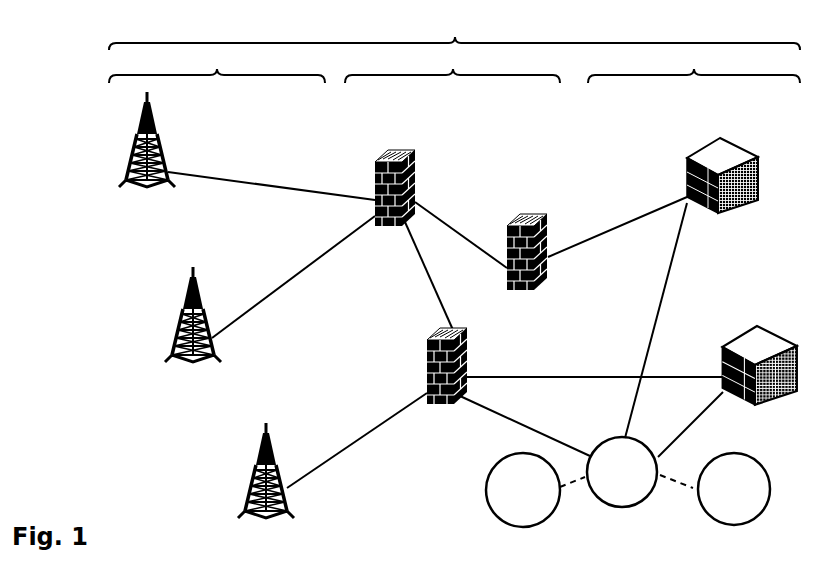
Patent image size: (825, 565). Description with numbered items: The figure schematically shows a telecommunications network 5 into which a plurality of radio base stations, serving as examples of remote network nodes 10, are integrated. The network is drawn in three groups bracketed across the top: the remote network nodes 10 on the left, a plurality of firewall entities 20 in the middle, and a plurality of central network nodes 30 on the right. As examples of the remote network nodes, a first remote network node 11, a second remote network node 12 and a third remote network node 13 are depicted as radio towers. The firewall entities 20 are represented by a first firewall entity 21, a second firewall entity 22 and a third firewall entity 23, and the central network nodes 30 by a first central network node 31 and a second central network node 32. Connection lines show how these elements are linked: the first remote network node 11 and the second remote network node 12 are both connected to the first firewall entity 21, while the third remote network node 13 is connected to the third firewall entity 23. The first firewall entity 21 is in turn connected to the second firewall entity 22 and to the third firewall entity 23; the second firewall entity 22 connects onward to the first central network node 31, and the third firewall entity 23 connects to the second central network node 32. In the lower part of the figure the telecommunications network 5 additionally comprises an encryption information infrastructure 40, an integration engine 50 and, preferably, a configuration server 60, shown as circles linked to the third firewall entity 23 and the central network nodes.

The telecommunications network 5 is at (454, 30).
The remote network nodes 10 is at (217, 65).
The first remote network node 11 is at (134, 139).
The second remote network node 12 is at (184, 314).
The third remote network node 13 is at (258, 470).
The firewall entities 20 is at (452, 65).
The first firewall entity 21 is at (374, 188).
The second firewall entity 22 is at (510, 252).
The third firewall entity 23 is at (427, 366).
The central network nodes 30 is at (694, 65).
The first central network node 31 is at (695, 175).
The second central network node 32 is at (737, 365).
The encryption information infrastructure 40 is at (622, 472).
The integration engine 50 is at (523, 490).
The configuration server 60 is at (734, 489).